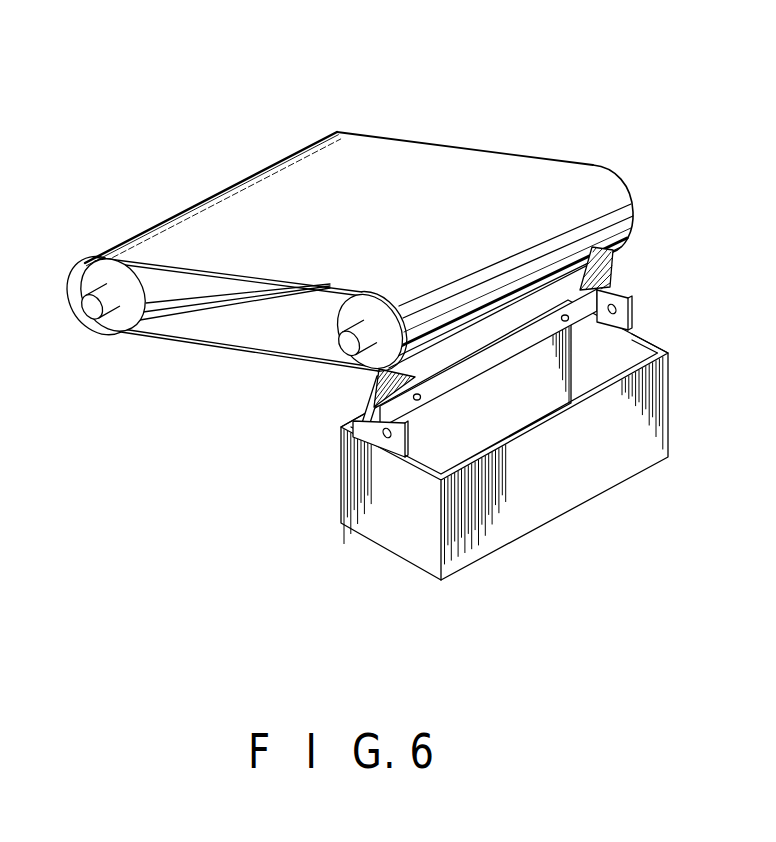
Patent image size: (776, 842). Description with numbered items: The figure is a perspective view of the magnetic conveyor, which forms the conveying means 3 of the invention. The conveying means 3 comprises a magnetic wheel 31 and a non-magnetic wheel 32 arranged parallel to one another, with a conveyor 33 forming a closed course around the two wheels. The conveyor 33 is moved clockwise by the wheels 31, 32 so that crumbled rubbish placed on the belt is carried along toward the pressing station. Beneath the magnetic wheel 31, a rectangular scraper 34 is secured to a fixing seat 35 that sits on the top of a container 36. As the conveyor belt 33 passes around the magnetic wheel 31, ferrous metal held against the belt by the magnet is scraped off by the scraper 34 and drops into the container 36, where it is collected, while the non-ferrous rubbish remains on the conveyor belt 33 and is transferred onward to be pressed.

The conveying means 3 is at (397, 300).
The magnetic wheel 31 is at (373, 356).
The non-magnetic wheel 32 is at (122, 324).
The conveyor 33 is at (575, 172).
The scraper 34 is at (612, 268).
The fixing seat 35 is at (488, 362).
The container 36 is at (655, 393).